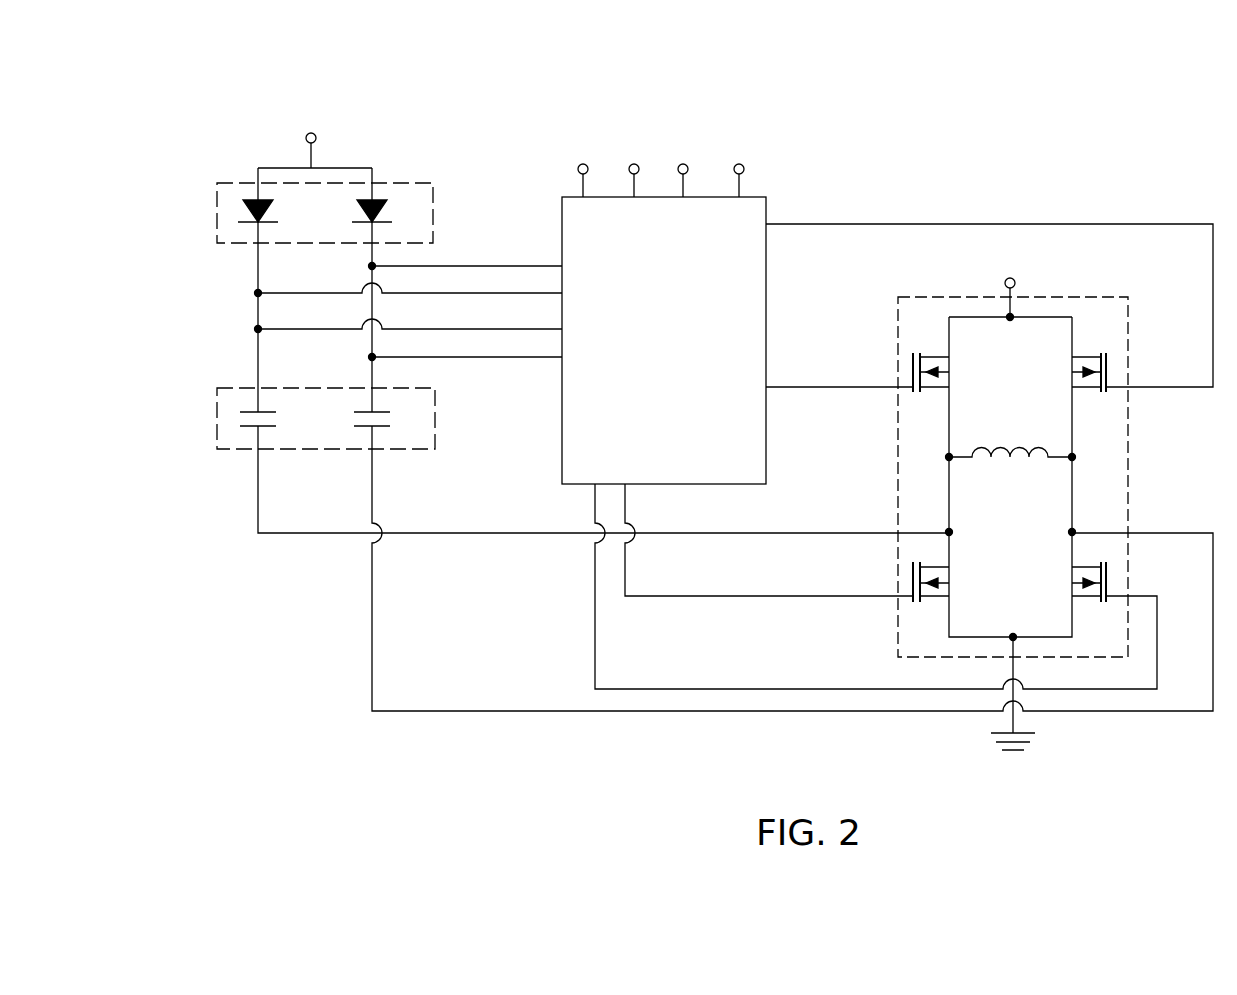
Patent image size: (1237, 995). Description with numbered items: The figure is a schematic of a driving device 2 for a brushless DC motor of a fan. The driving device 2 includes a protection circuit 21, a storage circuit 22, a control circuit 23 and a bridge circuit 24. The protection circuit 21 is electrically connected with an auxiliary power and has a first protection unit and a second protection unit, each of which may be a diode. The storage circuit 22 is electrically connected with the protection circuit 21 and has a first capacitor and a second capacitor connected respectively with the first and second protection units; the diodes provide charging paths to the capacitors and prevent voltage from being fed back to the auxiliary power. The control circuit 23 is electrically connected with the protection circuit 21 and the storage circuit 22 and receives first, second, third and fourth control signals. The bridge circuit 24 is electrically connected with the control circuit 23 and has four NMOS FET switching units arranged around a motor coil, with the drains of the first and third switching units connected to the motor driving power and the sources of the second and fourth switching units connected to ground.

The driving device 2 is at (245, 131).
The protection circuit 21 is at (433, 198).
The storage circuit 22 is at (435, 428).
The control circuit 23 is at (766, 208).
The bridge circuit 24 is at (1128, 313).